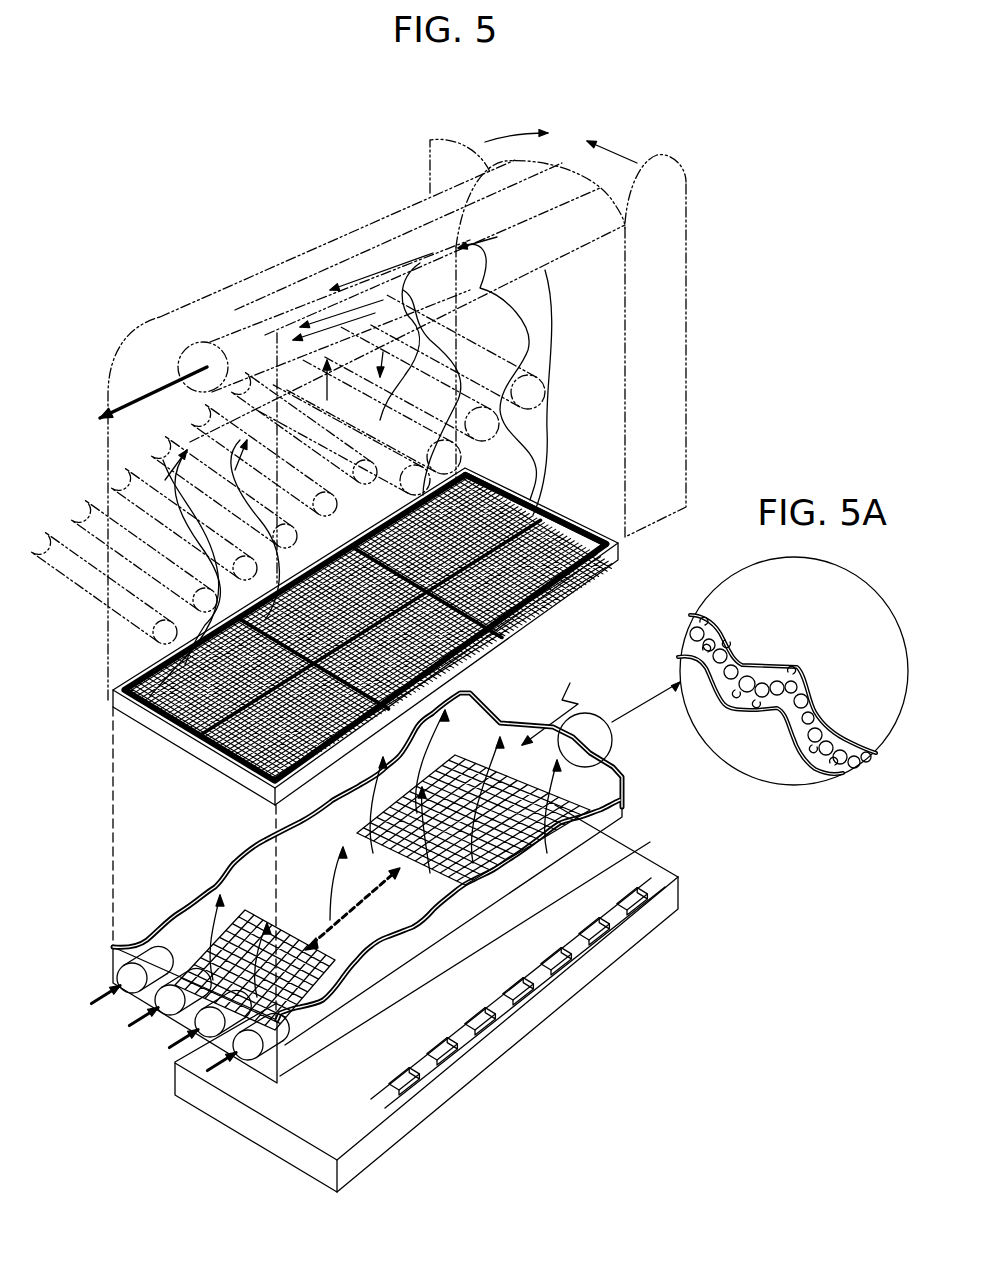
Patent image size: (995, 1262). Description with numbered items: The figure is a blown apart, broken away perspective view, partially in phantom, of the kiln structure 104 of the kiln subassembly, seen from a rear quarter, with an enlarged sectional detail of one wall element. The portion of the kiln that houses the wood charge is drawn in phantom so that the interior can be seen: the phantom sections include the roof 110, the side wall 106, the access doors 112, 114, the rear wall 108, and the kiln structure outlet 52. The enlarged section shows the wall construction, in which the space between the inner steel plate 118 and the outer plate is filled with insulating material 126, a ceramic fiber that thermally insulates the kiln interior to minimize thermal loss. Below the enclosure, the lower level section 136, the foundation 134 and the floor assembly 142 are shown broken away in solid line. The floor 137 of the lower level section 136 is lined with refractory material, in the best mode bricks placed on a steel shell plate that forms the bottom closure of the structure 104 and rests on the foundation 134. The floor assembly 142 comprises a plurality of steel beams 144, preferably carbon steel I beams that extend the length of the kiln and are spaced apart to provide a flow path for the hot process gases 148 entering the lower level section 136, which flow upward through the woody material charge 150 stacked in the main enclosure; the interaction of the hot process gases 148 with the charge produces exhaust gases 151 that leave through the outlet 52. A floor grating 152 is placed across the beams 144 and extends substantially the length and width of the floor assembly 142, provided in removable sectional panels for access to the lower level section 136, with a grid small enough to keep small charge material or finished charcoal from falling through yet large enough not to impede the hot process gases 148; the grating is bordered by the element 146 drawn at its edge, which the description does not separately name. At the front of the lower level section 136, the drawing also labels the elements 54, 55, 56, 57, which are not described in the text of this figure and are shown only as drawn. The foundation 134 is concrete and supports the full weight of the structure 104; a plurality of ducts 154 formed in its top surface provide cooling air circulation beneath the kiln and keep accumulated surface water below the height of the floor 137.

In FIG. 5, the kiln structure outlet 52 is at (197, 362).
In FIG. 5, the heat pipe 54 is at (115, 977).
In FIG. 5, the heat pipe 55 is at (133, 1008).
In FIG. 5, the heat pipe 56 is at (170, 1040).
In FIG. 5, the heat pipe 57 is at (257, 1050).
In FIG. 5, the structure 104 is at (225, 262).
In FIG. 5, the side wall 106 is at (608, 336).
In FIG. 5, the rear wall 108 is at (160, 323).
In FIG. 5, the roof 110 is at (333, 257).
In FIG. 5, the access door 112 is at (658, 177).
In FIG. 5, the access door 114 is at (448, 162).
In FIG. 5A, the inner steel plate 118 is at (805, 700).
In FIG. 5, the insulating material 126 is at (399, 840).
In FIG. 5A, the insulating material 126 is at (852, 762).
In FIG. 5, the foundation 134 is at (442, 998).
In FIG. 5, the lower level section 136 is at (381, 872).
In FIG. 5, the floor 137 is at (250, 860).
In FIG. 5, the floor assembly 142 is at (207, 757).
In FIG. 5, the steel beams 144 is at (517, 628).
In FIG. 5, the mesh frame 146 is at (618, 548).
In FIG. 5, the hot process gases 148 is at (355, 860).
In FIG. 5, the woody material charge 150 is at (385, 378).
In FIG. 5, the exhaust gases 151 is at (400, 298).
In FIG. 5, the floor grating 152 is at (583, 522).
In FIG. 5, the ducts 154 is at (549, 972).